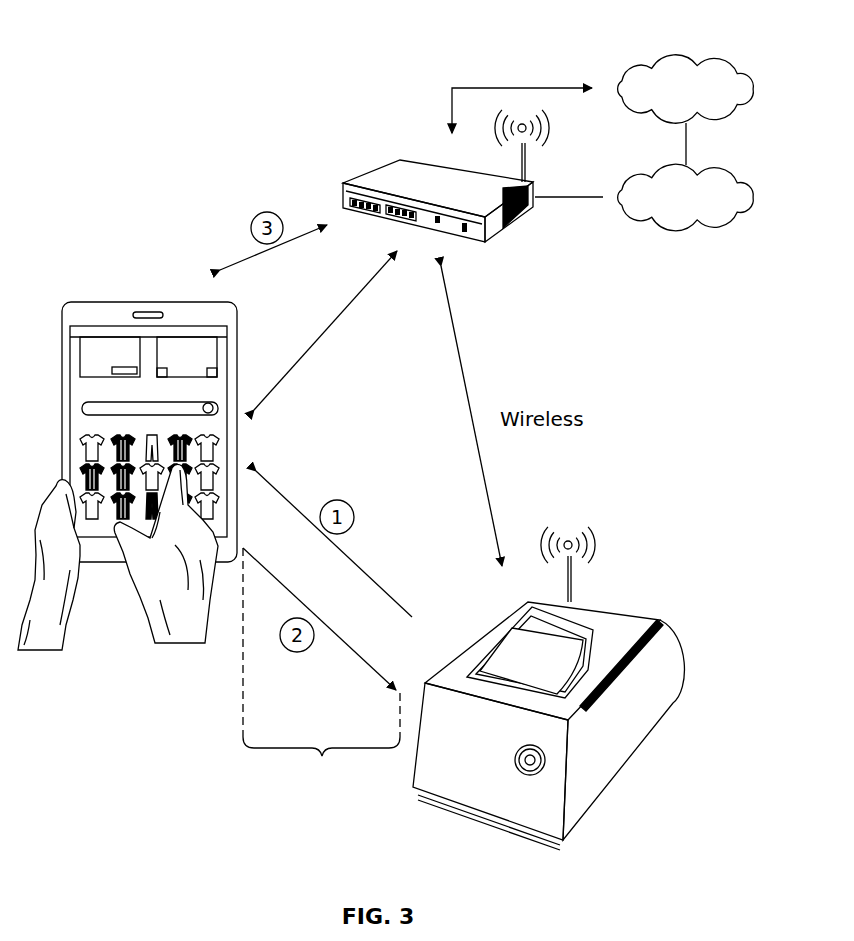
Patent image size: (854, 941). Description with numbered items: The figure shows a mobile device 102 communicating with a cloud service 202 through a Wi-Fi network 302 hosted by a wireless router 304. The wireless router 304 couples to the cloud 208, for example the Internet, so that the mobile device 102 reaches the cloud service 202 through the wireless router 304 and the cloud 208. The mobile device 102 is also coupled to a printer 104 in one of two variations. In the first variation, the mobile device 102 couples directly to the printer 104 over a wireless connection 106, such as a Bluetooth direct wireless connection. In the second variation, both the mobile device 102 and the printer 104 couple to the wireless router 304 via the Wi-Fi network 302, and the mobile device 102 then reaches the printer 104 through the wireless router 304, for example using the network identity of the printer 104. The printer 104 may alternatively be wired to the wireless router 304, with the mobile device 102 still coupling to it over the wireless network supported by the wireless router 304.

The mobile device 102 is at (148, 302).
The printer 104 is at (627, 612).
The wireless connection 106 is at (321, 668).
The cloud service 202 is at (686, 55).
The cloud 208 is at (687, 230).
The Wi-Fi network 302 is at (453, 322).
The wireless router 304 is at (459, 195).